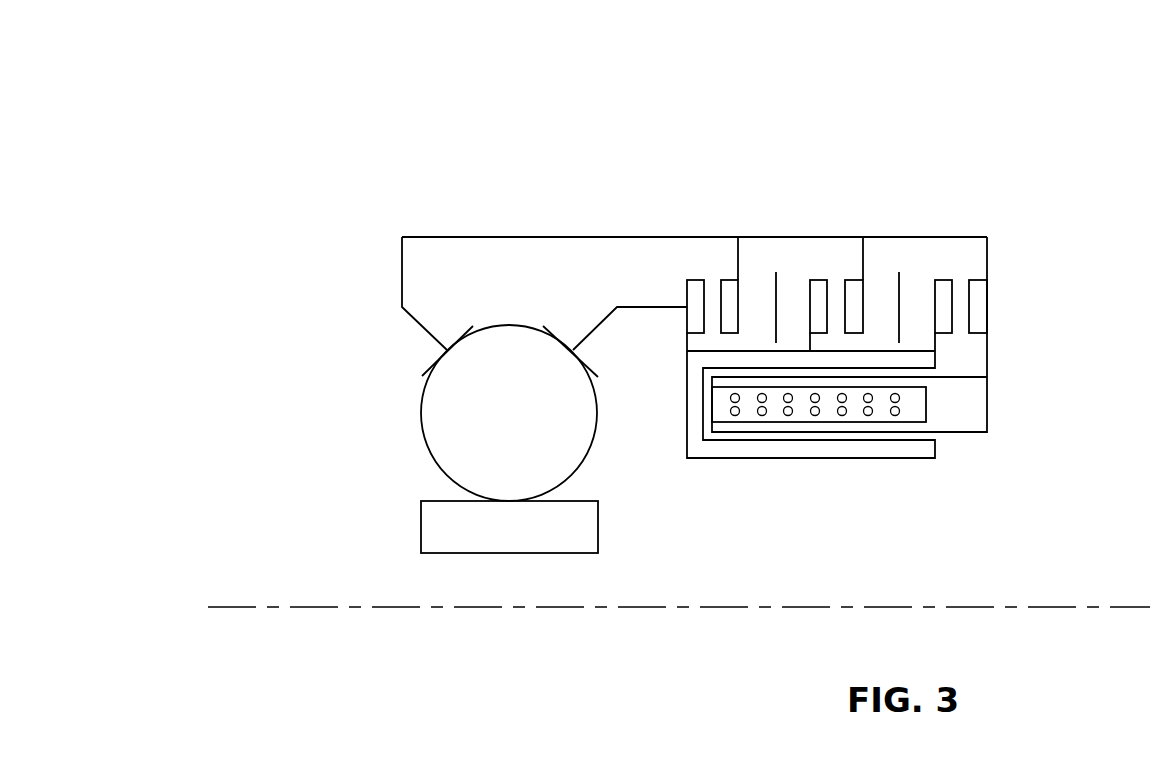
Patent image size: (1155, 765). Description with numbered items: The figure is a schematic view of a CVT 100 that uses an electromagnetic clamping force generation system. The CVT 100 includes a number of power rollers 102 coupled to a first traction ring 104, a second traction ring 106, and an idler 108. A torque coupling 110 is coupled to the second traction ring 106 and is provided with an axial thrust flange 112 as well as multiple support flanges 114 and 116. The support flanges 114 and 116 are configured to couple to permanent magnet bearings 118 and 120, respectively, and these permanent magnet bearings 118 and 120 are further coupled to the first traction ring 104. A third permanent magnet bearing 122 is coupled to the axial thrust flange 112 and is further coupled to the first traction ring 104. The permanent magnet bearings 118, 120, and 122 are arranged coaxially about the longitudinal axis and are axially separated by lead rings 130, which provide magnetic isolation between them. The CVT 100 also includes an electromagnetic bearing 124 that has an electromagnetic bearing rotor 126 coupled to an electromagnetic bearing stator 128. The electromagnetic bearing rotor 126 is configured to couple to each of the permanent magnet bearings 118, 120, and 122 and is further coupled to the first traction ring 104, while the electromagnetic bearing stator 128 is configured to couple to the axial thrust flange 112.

The CVT 100 is at (417, 145).
The power rollers 102 is at (421, 413).
The first traction ring 104 is at (598, 326).
The second traction ring 106 is at (420, 328).
The idler 108 is at (502, 553).
The torque coupling 110 is at (527, 237).
The axial thrust flange 112 is at (988, 262).
The support flange 114 is at (742, 256).
The support flange 116 is at (866, 256).
The permanent magnet bearing 118 is at (712, 268).
The permanent magnet bearing 120 is at (838, 268).
The permanent magnet bearing 122 is at (960, 272).
The electromagnetic bearing 124 is at (867, 462).
The electromagnetic bearing rotor 126 is at (936, 444).
The electromagnetic bearing stator 128 is at (988, 403).
The lead rings 130 is at (781, 272).